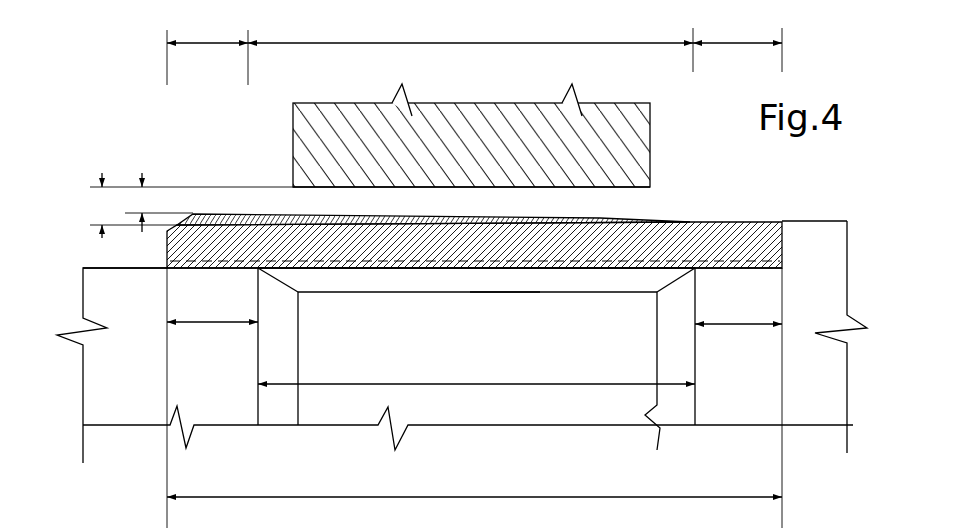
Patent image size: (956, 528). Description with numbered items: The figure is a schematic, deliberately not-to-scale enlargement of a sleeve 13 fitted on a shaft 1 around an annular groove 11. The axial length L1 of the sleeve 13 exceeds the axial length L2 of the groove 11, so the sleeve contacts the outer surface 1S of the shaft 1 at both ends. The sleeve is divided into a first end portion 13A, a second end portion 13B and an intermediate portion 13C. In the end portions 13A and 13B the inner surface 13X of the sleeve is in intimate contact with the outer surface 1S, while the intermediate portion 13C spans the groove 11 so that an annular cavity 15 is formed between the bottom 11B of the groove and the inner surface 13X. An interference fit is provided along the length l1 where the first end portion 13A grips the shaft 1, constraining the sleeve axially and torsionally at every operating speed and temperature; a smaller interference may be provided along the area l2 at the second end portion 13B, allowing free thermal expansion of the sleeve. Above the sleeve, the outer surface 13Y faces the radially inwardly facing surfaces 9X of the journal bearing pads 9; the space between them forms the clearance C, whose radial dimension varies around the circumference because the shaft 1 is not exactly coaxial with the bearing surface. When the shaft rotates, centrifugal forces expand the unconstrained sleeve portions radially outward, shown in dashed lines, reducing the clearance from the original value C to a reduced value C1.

The shaft 1 is at (122, 394).
The outer surface of the shaft 1S is at (105, 266).
The journal bearing pads 9 is at (373, 122).
The radially inwardly facing surface of the journal bearing pad 9X is at (604, 188).
The annular groove 11 is at (435, 283).
The bottom of the annular groove 11B is at (512, 296).
The sleeve 13 is at (718, 242).
The first end portion of the sleeve 13A is at (737, 47).
The second end portion of the sleeve 13B is at (207, 54).
The intermediate portion of the sleeve 13C is at (470, 33).
The inner surface of the sleeve 13X is at (632, 270).
The outer surface of the sleeve 13Y is at (751, 222).
The annular cavity 15 is at (359, 280).
The clearance C is at (100, 207).
The reduced clearance C1 is at (143, 199).
The axial length of the sleeve L1 is at (474, 488).
The axial length of the groove L2 is at (476, 375).
The length of interference area at the first end l1 is at (738, 314).
The length of interference area at the second end l2 is at (212, 312).